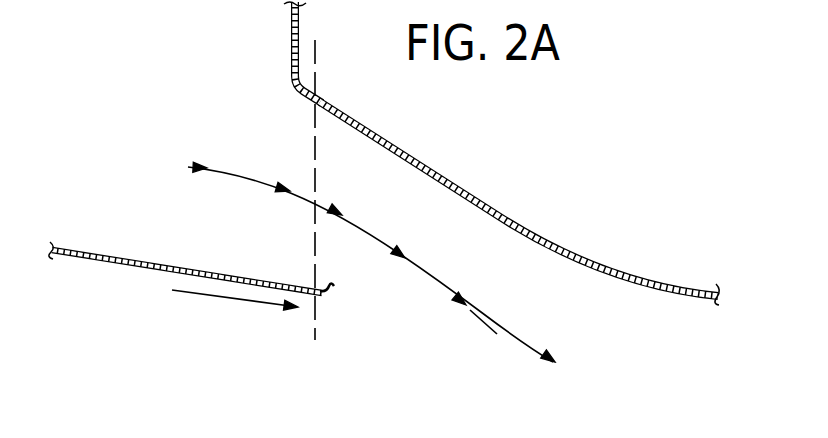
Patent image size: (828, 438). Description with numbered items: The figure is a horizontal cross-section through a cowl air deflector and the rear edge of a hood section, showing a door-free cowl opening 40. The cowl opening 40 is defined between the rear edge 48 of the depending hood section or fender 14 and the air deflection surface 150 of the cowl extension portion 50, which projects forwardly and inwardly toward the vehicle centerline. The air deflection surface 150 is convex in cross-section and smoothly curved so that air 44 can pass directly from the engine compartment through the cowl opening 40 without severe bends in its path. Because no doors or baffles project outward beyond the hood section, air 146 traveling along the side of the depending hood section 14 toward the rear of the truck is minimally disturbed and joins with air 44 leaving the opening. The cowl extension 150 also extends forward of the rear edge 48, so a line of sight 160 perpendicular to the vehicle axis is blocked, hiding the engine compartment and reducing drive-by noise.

The air deflection surface 150 is at (347, 120).
The cowl extension portion 50 is at (510, 240).
The depending hood section or fender 14 is at (143, 268).
The rear edge of depending hood section 48 is at (331, 290).
The air traveling along the side of the depending hood section 146 is at (215, 298).
The cowl opening 40 is at (382, 269).
The air passing through the cowl opening 44 is at (497, 335).
The line of sight 160 is at (315, 241).